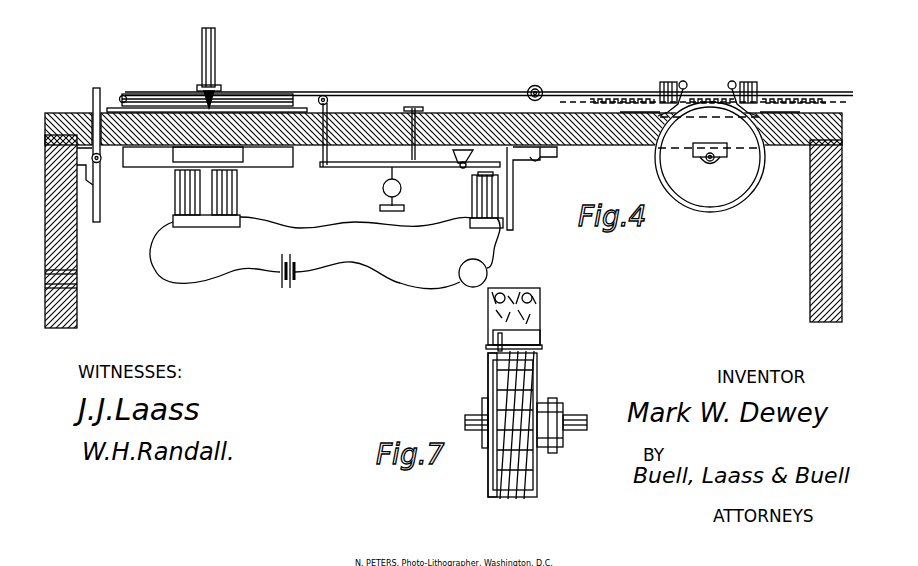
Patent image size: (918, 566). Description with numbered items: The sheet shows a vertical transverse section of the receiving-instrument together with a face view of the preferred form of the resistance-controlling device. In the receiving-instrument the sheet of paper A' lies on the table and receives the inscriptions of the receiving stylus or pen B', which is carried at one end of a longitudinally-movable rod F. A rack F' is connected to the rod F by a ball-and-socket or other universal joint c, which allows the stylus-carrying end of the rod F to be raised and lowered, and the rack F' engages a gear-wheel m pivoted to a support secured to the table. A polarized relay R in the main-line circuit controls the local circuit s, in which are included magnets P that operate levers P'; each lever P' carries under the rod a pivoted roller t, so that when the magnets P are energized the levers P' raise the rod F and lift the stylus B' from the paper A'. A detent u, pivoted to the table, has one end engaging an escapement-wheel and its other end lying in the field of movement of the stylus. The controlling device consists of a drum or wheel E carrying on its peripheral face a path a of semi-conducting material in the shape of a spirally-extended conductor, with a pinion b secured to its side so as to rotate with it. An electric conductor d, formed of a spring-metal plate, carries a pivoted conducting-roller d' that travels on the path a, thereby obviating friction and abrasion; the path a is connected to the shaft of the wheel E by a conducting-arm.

In FIG. 4, the detent u is at (89, 145).
In FIG. 4, the sheet of paper A' is at (207, 90).
In FIG. 4, the roller t is at (332, 101).
In FIG. 4, the receiving stylus or pen B' is at (207, 68).
In FIG. 4, the longitudinally-movable rod F is at (489, 80).
In FIG. 4, the universal joint c is at (535, 82).
In FIG. 4, the rack F' is at (675, 103).
In FIG. 4, the gear-wheel m is at (710, 157).
In FIG. 4, the magnet P is at (365, 188).
In FIG. 4, the lever P' is at (311, 157).
In FIG. 4, the local circuit s is at (327, 250).
In FIG. 4, the polarized relay R is at (469, 267).
In FIG. 7, the electric conductor d is at (523, 316).
In FIG. 7, the electric conducting-roller d' is at (500, 347).
In FIG. 7, the path of semi-conducting material a is at (492, 386).
In FIG. 7, the drum or wheel E is at (488, 401).
In FIG. 7, the pinion b is at (550, 403).